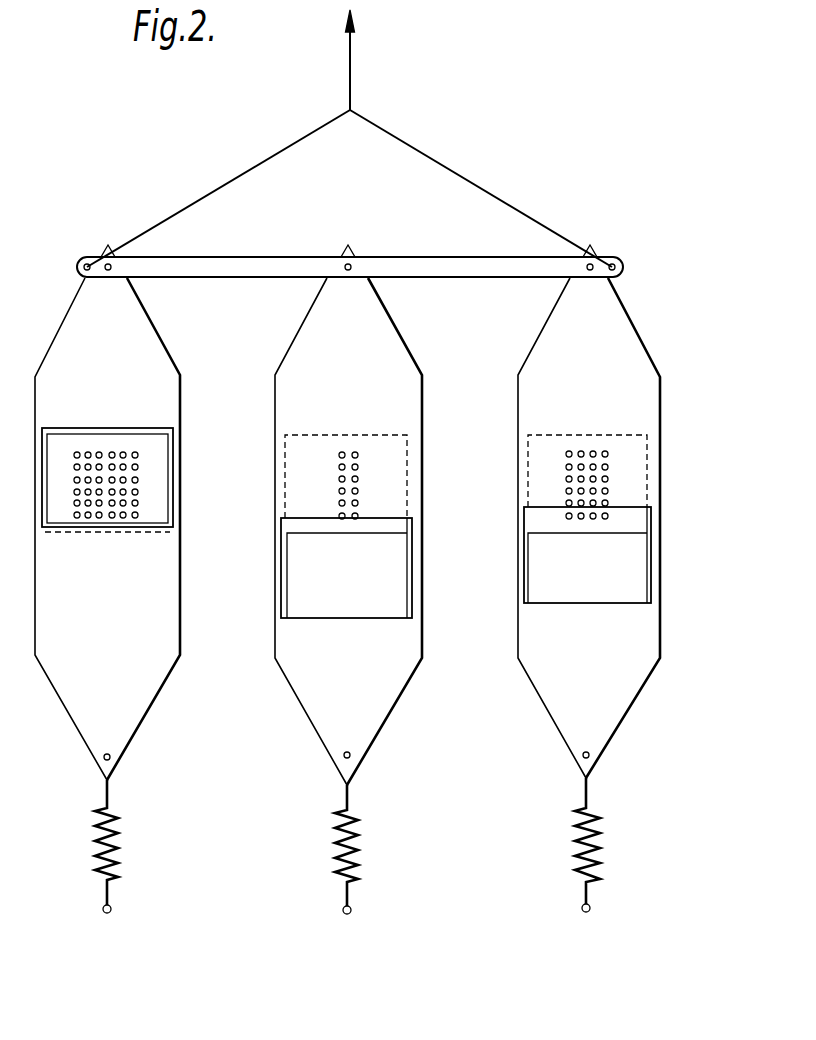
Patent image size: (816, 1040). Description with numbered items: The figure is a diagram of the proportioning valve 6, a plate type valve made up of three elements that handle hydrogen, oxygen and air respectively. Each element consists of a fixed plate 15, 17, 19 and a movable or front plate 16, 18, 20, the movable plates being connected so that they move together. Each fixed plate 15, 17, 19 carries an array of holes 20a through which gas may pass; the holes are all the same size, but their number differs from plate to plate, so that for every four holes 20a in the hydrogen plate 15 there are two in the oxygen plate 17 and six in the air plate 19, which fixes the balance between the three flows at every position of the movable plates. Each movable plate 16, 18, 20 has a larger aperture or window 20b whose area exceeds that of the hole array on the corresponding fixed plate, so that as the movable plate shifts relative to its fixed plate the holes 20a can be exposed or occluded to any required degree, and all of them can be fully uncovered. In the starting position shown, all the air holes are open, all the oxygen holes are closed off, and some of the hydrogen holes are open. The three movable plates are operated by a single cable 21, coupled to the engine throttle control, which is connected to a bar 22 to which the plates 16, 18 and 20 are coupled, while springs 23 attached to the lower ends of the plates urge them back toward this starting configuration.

The filter bag assembly 6 is at (416, 912).
The fixed plate 15 is at (540, 523).
The movable plate 16 is at (560, 650).
The fixed plate 17 is at (307, 527).
The movable plate 18 is at (307, 650).
The fixed plate 19 is at (153, 483).
The movable plate 20 is at (160, 573).
The holes 20a is at (135, 455).
The window 20b is at (43, 472).
The cable 21 is at (350, 65).
The bar 22 is at (437, 258).
The springs 23 is at (120, 847).